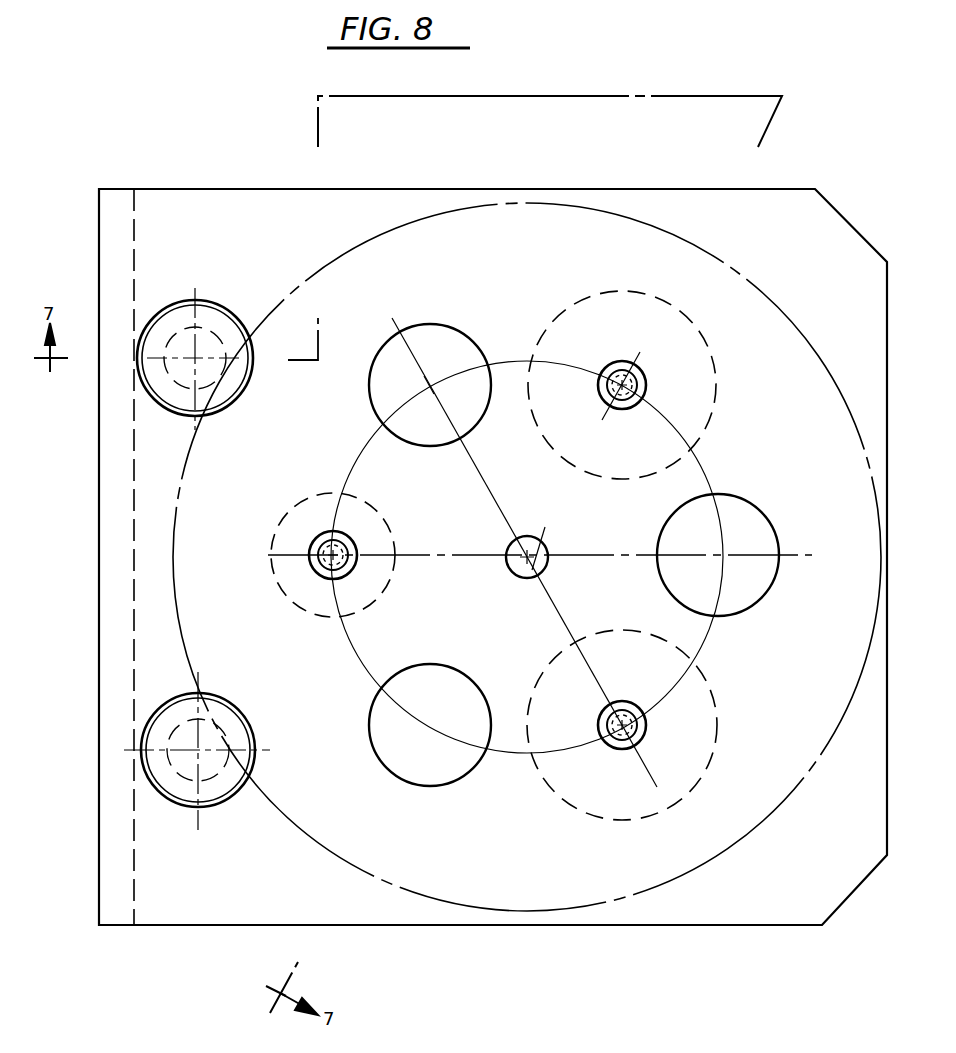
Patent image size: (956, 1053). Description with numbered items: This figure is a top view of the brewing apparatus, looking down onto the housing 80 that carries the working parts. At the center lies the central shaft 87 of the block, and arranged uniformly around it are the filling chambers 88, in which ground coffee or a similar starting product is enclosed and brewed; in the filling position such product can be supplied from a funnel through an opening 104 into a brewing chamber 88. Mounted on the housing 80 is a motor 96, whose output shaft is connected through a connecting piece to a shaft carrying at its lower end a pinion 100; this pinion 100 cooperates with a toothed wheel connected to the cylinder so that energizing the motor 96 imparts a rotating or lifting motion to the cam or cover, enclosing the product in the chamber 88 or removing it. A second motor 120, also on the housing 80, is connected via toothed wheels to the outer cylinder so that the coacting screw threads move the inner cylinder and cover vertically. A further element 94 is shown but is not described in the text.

The housing 80 is at (280, 189).
The central shaft 87 is at (543, 545).
The filling chamber 88 is at (595, 300).
The bearing 94 is at (645, 385).
The motor 96 is at (212, 318).
The pinion 100 is at (180, 340).
The opening 104 is at (430, 328).
The motor 120 is at (205, 793).